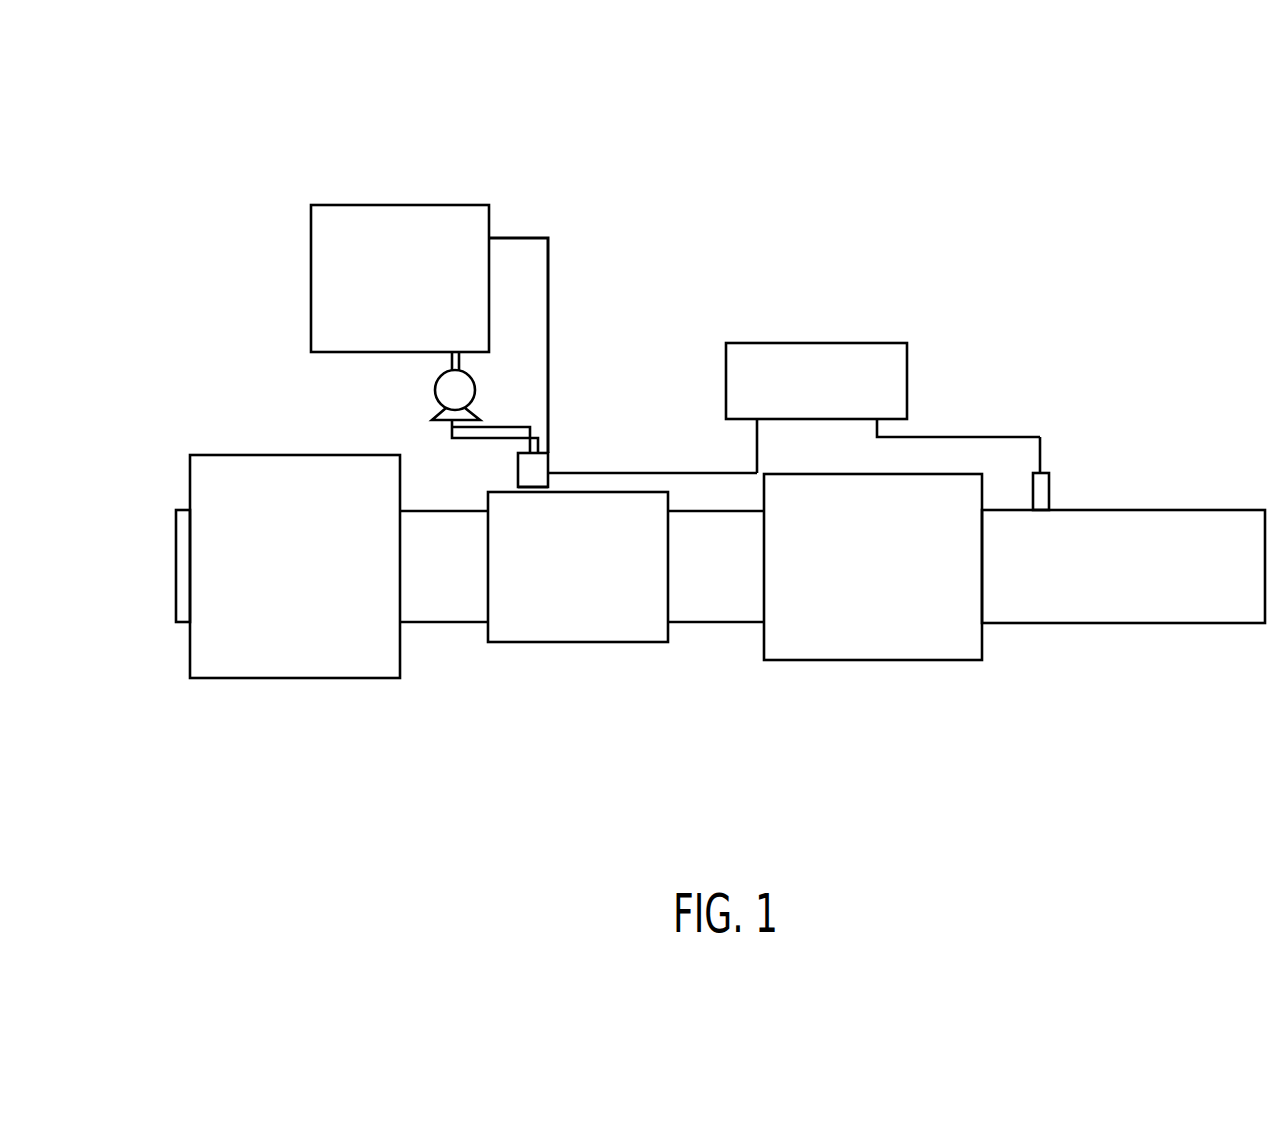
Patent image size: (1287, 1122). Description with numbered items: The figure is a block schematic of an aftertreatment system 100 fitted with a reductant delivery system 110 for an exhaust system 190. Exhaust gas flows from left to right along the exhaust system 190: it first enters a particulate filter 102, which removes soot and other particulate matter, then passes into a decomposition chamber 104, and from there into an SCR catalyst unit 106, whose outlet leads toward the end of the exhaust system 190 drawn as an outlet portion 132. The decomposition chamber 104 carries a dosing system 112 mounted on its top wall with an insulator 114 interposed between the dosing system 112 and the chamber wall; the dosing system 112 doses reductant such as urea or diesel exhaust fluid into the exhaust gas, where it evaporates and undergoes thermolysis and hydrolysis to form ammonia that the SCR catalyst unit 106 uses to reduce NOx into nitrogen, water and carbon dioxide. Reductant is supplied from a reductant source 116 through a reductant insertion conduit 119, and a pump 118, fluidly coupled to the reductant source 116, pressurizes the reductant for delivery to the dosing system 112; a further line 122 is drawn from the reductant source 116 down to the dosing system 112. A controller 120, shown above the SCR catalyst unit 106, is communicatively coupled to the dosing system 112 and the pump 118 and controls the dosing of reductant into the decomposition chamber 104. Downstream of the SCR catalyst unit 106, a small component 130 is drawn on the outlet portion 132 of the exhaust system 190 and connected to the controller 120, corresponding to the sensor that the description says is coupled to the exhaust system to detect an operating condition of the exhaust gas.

The aftertreatment system 100 is at (146, 103).
The particulate filter 102 is at (320, 679).
The decomposition chamber 104 is at (660, 492).
The SCR catalyst unit 106 is at (877, 661).
The reductant delivery system 110 is at (637, 388).
The dosing system 112 is at (549, 468).
The insulator 114 is at (520, 487).
The reductant source 116 is at (455, 205).
The pump 118 is at (436, 392).
The reductant insertion conduit 119 is at (479, 426).
The controller 120 is at (803, 343).
The signal line 122 is at (545, 345).
The downstream sensor 130 is at (1069, 478).
The exhaust outlet 132 is at (1192, 642).
The exhaust system 190 is at (480, 730).